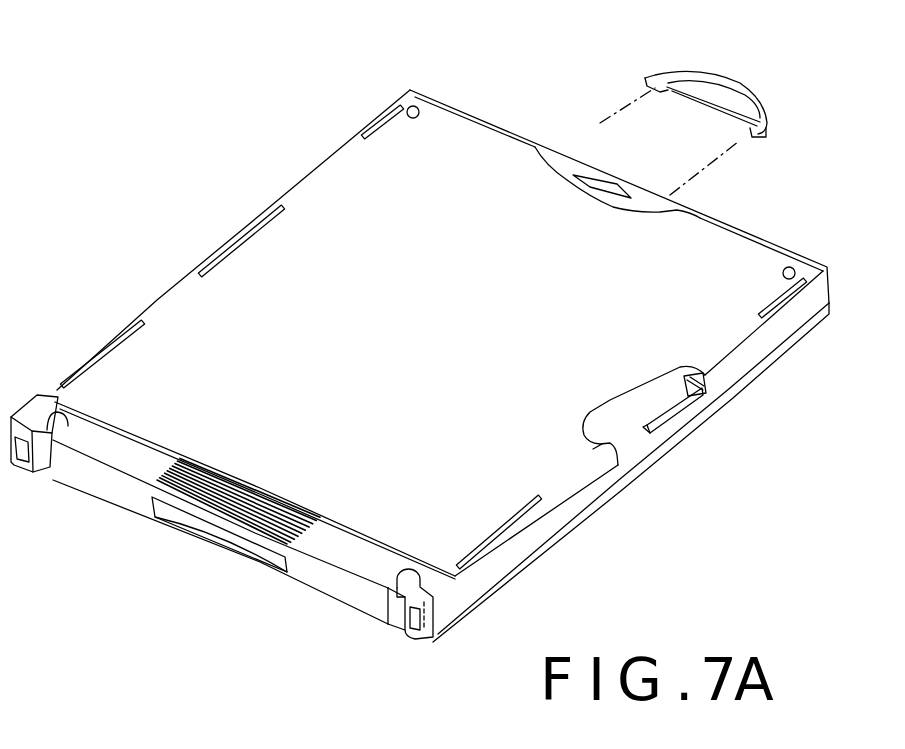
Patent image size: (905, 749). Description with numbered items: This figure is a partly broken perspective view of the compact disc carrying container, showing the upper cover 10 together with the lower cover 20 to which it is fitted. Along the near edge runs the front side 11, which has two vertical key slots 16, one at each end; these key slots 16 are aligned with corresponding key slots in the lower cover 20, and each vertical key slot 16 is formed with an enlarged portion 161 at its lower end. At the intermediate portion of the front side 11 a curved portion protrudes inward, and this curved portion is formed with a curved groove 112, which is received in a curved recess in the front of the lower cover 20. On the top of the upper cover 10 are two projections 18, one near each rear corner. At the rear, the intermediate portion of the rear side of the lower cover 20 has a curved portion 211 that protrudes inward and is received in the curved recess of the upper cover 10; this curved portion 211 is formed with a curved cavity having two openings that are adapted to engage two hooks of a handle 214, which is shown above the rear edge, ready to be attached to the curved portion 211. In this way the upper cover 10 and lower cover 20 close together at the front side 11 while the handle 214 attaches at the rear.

The upper cover 10 is at (455, 155).
The front side 11 is at (337, 582).
The vertical key slot 16 is at (58, 408).
The projection 18 is at (414, 106).
The lower cover 20 is at (640, 462).
The curved groove 112 is at (262, 556).
The enlarged portion 161 is at (38, 477).
The curved portion 211 is at (640, 205).
The handle 214 is at (735, 95).